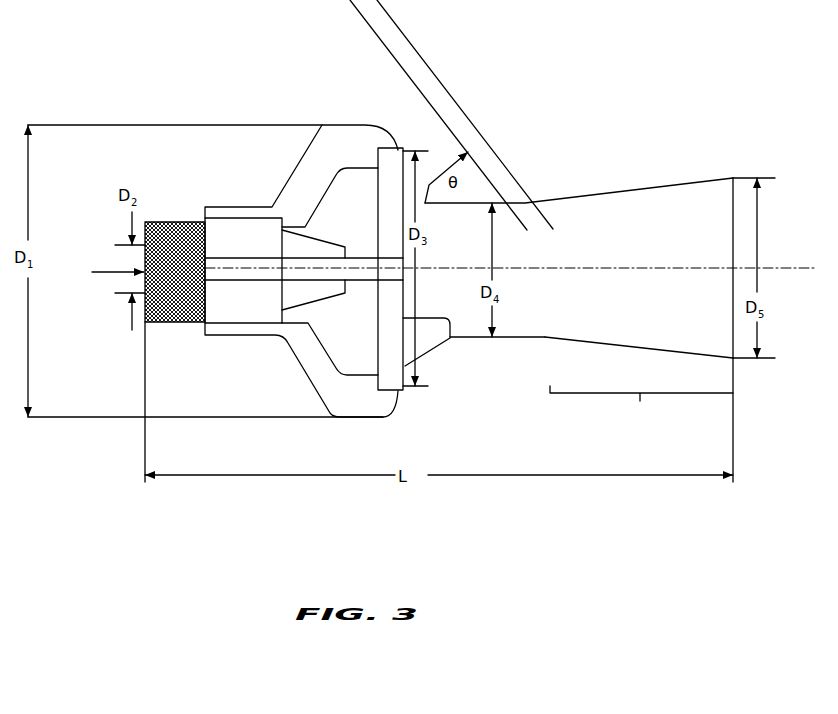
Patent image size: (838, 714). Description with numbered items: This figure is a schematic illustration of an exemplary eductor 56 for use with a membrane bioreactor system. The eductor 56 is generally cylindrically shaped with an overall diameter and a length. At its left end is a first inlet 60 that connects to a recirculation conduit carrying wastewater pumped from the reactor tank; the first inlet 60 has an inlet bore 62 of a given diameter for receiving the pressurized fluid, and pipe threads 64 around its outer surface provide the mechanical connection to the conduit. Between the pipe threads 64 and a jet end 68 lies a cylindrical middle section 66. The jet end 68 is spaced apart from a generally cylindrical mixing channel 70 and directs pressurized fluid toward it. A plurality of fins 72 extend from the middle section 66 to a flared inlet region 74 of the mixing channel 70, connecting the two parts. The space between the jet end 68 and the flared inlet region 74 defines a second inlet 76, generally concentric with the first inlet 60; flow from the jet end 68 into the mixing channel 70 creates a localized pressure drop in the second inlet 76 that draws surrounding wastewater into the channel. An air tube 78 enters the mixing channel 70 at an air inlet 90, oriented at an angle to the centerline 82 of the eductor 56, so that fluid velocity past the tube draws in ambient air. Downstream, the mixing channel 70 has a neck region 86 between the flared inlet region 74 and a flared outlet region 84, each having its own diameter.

The eductor 56 is at (652, 88).
The first inlet 60 is at (100, 312).
The inlet bore 62 is at (102, 272).
The pipe threads 64 is at (172, 220).
The cylindrical middle section 66 is at (250, 250).
The jet end 68 is at (318, 291).
The mixing channel 70 is at (641, 409).
The fins 72 is at (362, 155).
The flared inlet region 74 is at (450, 350).
The second inlet 76 is at (337, 210).
The air tube 78 is at (452, 104).
The centerline 82 is at (794, 261).
The flared outlet region 84 is at (657, 332).
The neck region 86 is at (525, 292).
The air inlet 90 is at (503, 192).